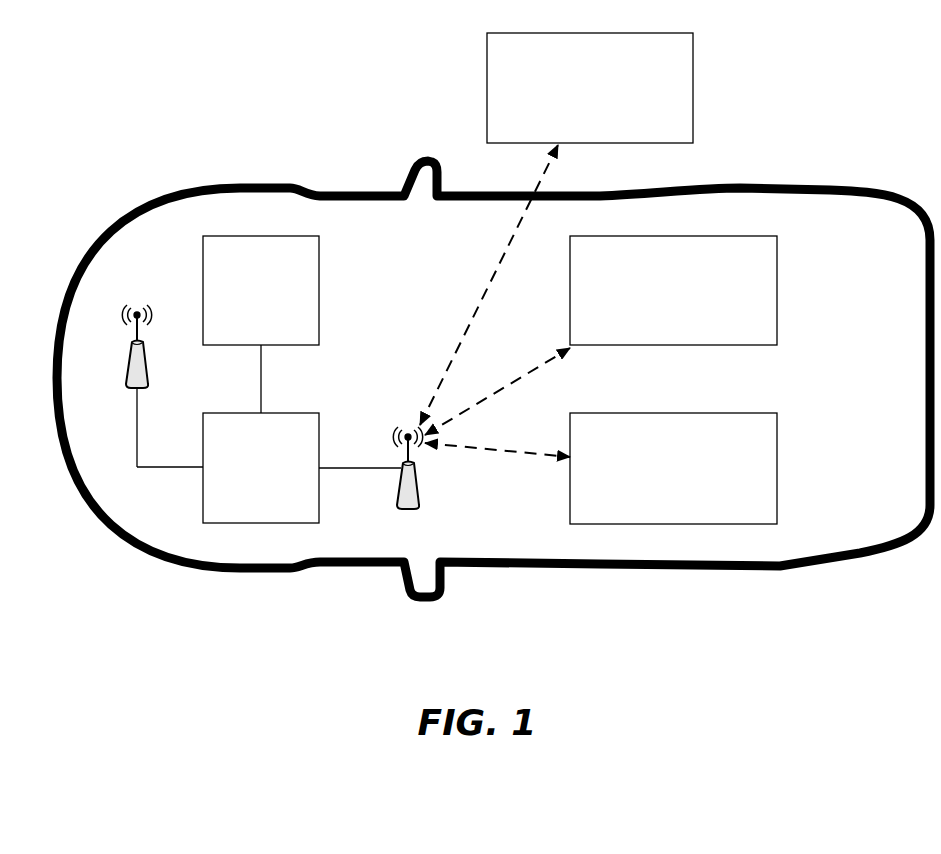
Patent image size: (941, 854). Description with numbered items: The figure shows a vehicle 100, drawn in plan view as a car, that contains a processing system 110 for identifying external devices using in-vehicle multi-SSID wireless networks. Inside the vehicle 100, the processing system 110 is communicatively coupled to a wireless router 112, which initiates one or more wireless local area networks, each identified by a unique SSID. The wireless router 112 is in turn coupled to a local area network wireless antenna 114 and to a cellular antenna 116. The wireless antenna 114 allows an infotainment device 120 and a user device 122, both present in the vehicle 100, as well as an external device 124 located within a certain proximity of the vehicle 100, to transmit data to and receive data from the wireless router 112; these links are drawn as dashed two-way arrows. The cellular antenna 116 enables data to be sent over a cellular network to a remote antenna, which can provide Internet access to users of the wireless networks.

The vehicle 100 is at (147, 195).
The processing system 110 is at (243, 301).
The wireless router 112 is at (243, 481).
The wireless antenna 114 is at (418, 506).
The cellular antenna 116 is at (147, 383).
The infotainment device 120 is at (655, 301).
The user device 122 is at (655, 481).
The external device 124 is at (572, 97).